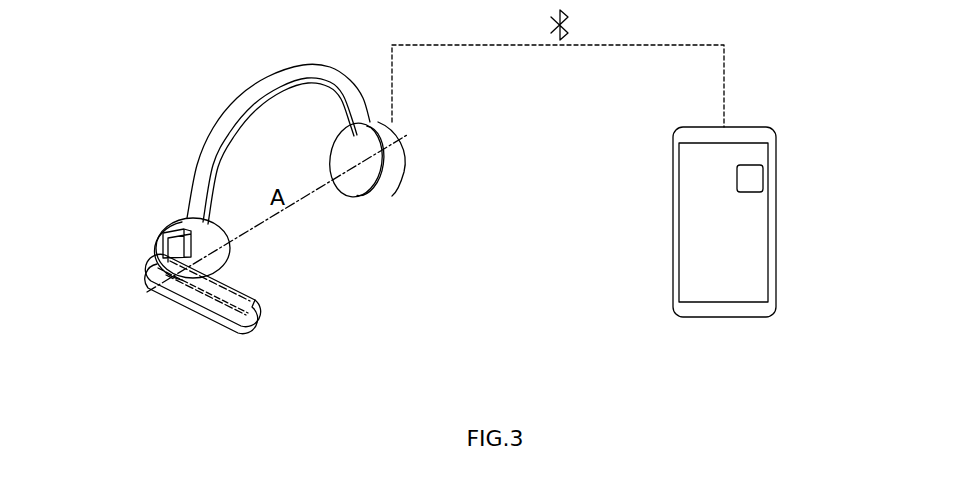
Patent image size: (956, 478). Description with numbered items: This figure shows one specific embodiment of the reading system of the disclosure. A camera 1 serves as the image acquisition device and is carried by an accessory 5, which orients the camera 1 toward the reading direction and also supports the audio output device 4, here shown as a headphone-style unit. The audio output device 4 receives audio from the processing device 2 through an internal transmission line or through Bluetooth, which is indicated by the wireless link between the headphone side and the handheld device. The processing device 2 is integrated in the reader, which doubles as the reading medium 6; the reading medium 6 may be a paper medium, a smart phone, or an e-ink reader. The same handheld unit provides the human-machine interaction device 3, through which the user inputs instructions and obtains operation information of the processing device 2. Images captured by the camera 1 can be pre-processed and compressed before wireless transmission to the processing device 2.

The camera 1 is at (257, 322).
The processing device 2 is at (752, 163).
The human-machine interaction (HMI) device 3 is at (737, 307).
The audio output device 4 is at (393, 193).
The accessory 5 is at (157, 242).
The reading medium 6 is at (733, 246).